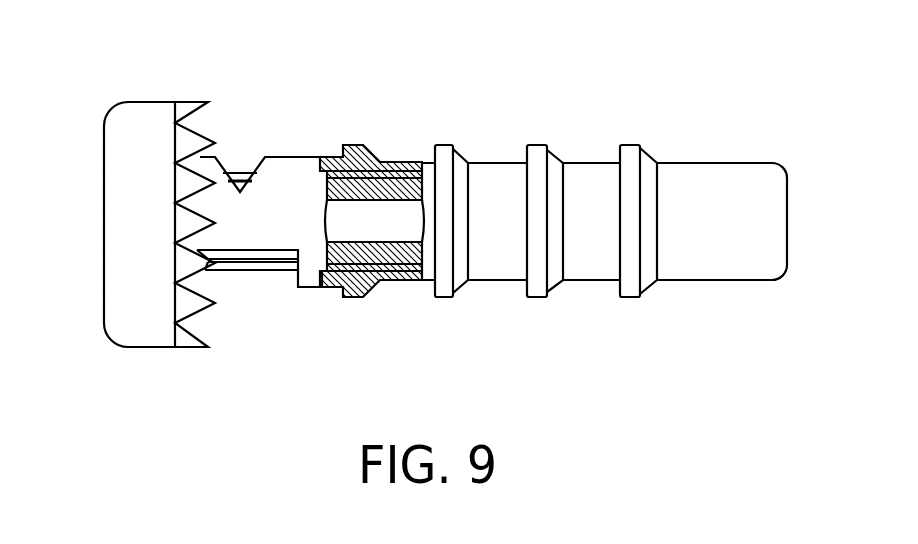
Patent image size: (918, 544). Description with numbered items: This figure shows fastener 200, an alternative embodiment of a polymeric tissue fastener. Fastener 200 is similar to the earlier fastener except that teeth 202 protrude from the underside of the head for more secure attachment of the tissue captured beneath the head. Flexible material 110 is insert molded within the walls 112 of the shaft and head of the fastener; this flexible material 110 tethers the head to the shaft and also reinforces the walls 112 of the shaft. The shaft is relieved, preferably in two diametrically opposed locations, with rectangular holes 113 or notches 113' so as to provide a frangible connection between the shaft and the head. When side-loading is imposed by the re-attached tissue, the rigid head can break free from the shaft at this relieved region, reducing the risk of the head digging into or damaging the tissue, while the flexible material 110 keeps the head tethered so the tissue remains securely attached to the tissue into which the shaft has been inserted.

The fastener 200 is at (190, 45).
The teeth 202 is at (190, 347).
The flexible material 110 is at (230, 168).
The walls 112 is at (413, 163).
The rectangular holes 113 is at (309, 295).
The notches 113' is at (311, 146).